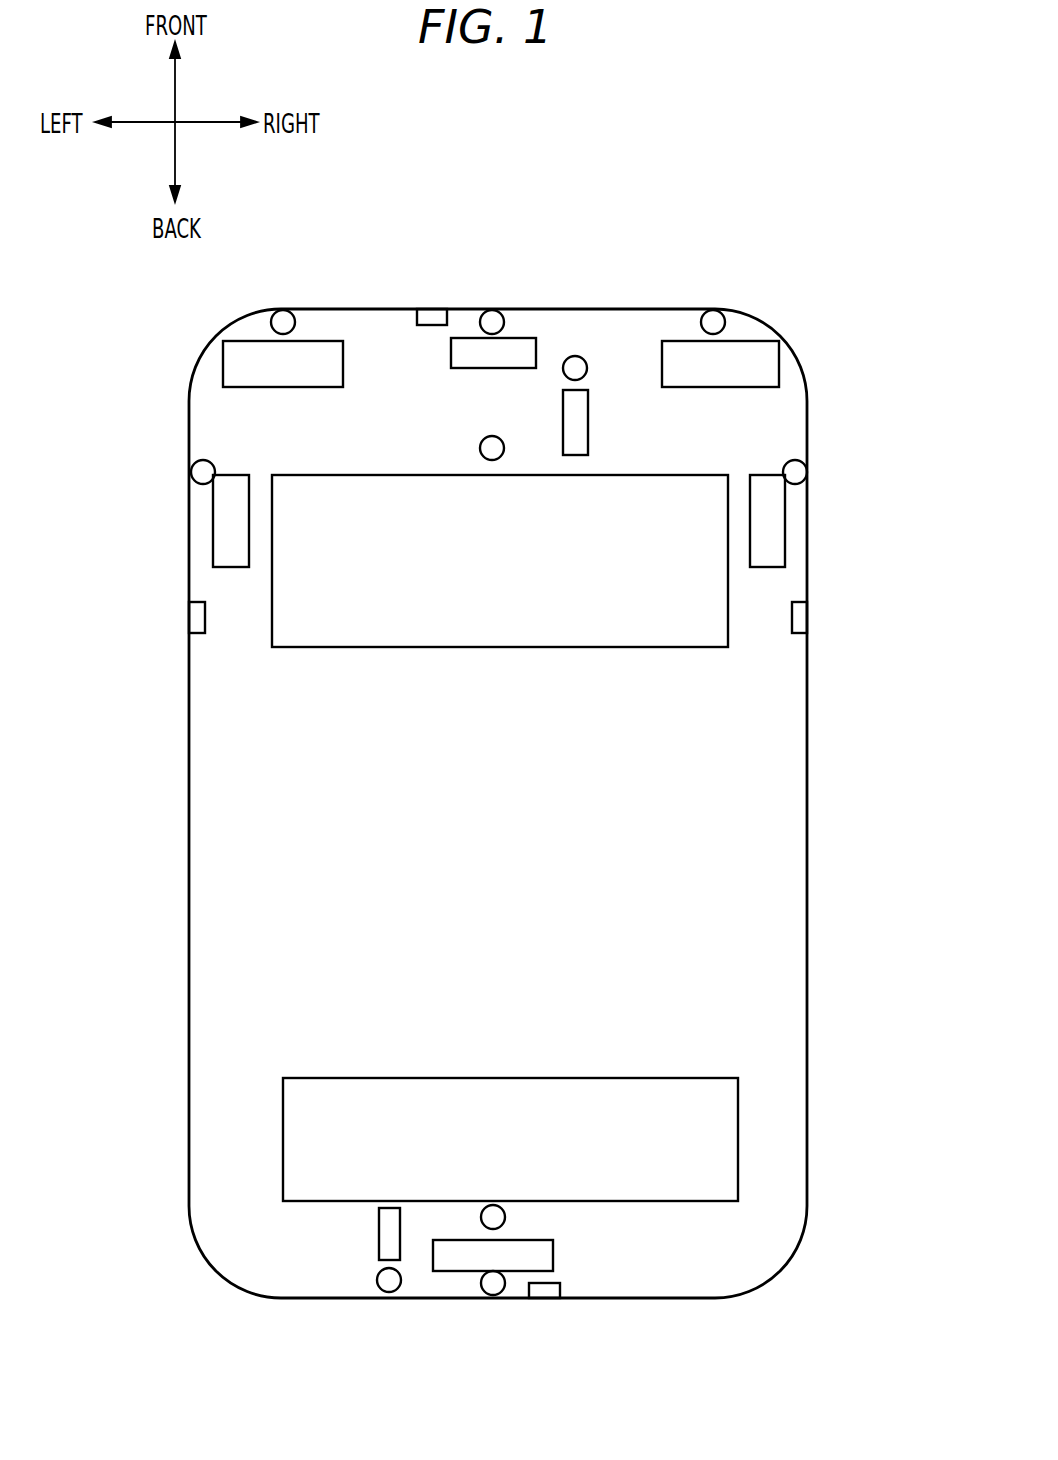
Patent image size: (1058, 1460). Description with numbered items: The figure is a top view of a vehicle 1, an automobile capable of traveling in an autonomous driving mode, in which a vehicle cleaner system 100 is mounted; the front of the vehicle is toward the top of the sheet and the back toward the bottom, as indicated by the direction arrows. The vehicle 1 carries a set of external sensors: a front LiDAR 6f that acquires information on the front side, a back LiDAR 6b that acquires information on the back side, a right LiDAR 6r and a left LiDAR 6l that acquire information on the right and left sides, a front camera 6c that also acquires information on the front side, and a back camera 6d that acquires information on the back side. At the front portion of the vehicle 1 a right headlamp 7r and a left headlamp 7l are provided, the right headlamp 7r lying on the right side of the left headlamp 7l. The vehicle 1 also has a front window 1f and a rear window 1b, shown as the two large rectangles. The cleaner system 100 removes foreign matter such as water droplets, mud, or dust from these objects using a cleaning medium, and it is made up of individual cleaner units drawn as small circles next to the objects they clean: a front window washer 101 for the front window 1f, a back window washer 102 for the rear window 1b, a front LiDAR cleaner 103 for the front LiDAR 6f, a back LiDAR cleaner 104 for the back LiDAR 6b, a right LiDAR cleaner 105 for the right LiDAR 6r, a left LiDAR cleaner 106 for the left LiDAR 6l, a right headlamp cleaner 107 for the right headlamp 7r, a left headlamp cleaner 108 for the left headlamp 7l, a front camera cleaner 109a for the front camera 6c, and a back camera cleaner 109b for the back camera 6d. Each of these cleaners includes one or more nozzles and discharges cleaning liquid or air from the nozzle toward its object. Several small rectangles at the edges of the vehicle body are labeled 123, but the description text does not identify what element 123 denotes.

The vehicle 1 is at (708, 110).
The vehicle cleaner system 100 is at (575, 202).
The front window 1f is at (716, 595).
The rear window 1b is at (722, 1130).
The front window washer 101 is at (484, 442).
The back window washer 102 is at (505, 1217).
The front LiDAR cleaner 103 is at (490, 311).
The back LiDAR cleaner 104 is at (493, 1297).
The right LiDAR cleaner 105 is at (797, 470).
The left LiDAR cleaner 106 is at (203, 460).
The right headlamp cleaner 107 is at (716, 310).
The left headlamp cleaner 108 is at (283, 310).
The front camera cleaner 109a is at (578, 357).
The back camera cleaner 109b is at (383, 1290).
The connector 123 is at (431, 309).
The front LiDAR 6f is at (531, 340).
The back LiDAR 6b is at (446, 1252).
The left LiDAR 6l is at (224, 515).
The right LiDAR 6r is at (777, 522).
The front camera 6c is at (588, 420).
The back camera 6d is at (380, 1235).
The left headlamp 7l is at (238, 362).
The right headlamp 7r is at (752, 360).